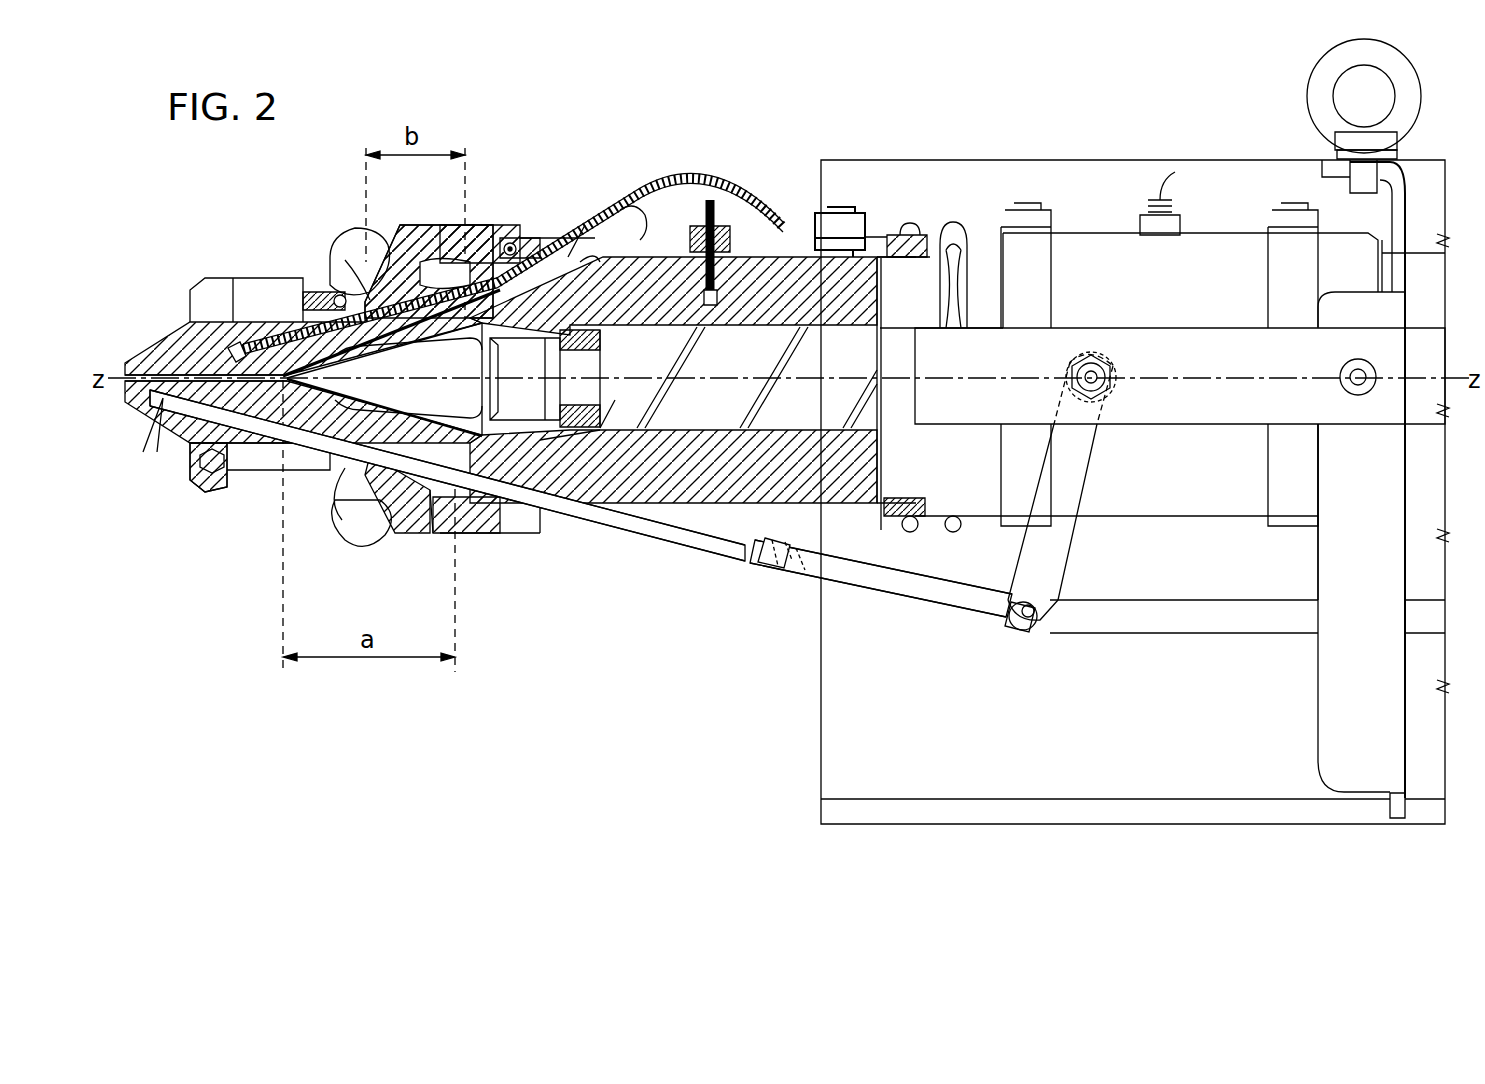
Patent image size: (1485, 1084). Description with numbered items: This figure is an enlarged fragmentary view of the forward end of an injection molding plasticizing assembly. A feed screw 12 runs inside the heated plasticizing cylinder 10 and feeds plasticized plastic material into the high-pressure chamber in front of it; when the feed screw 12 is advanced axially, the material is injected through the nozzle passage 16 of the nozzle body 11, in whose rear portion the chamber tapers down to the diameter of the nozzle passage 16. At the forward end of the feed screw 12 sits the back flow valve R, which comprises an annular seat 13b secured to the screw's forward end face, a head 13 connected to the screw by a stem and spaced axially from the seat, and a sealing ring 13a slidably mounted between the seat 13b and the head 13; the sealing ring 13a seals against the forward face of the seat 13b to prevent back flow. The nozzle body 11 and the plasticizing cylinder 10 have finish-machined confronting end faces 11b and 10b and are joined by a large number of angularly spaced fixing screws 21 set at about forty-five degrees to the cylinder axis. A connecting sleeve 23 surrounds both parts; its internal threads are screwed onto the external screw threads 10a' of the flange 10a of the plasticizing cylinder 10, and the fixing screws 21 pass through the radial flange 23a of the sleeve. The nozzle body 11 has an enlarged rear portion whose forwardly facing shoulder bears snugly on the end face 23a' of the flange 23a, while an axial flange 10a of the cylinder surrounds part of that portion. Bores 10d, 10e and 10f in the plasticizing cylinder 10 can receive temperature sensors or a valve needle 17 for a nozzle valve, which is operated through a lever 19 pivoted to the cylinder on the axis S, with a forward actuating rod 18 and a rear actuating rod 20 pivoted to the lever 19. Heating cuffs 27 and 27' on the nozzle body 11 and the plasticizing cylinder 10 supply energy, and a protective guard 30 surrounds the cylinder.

The plasticizing cylinder 10 is at (758, 250).
The flange 10a is at (508, 382).
The external screw threads 10a' is at (434, 232).
The end face 10b is at (420, 528).
The bore 10d is at (638, 235).
The bore 10e is at (703, 248).
The bore 10f is at (590, 450).
The nozzle body 11 is at (158, 338).
The end face 11b is at (525, 379).
The feed screw 12 is at (736, 410).
The head 13 is at (283, 480).
The sealing ring 13a is at (582, 250).
The annular seat 13b is at (598, 349).
The nozzle passage 16 is at (145, 446).
The valve needle 17 is at (214, 487).
The forward actuating rod 18 is at (848, 578).
The lever 19 is at (1080, 478).
The rear actuating rod 20 is at (1190, 620).
The fixing screws 21 is at (345, 245).
The connecting sleeve 23 is at (505, 540).
The radial flange 23a is at (403, 384).
The end face 23a' is at (312, 386).
The heating cuff 27 is at (268, 268).
The heating cuff 27' is at (872, 213).
The protective guard 30 is at (1050, 160).
The back flow valve R is at (555, 440).
The axis S is at (1110, 370).